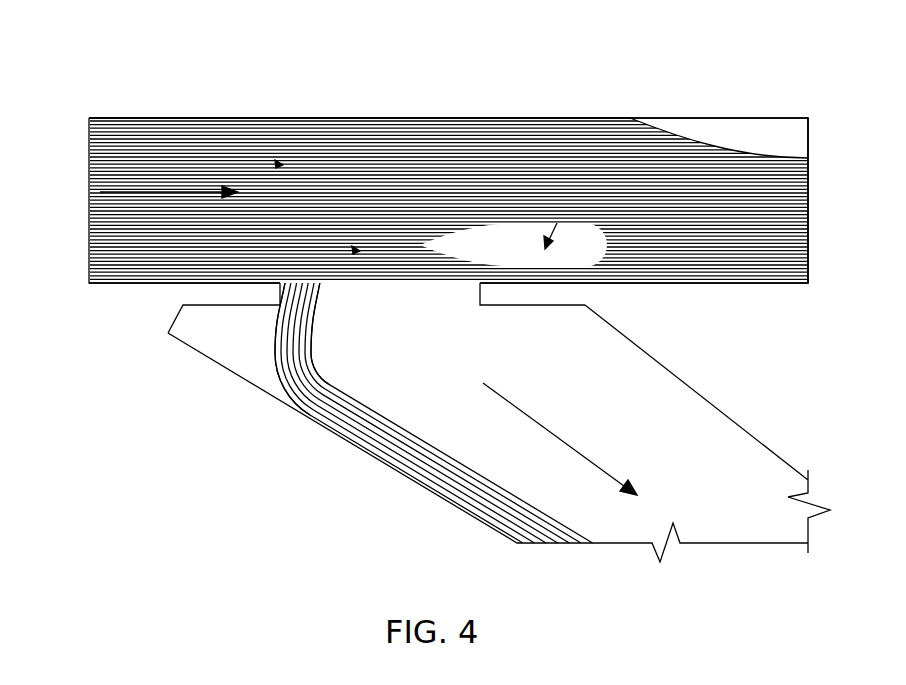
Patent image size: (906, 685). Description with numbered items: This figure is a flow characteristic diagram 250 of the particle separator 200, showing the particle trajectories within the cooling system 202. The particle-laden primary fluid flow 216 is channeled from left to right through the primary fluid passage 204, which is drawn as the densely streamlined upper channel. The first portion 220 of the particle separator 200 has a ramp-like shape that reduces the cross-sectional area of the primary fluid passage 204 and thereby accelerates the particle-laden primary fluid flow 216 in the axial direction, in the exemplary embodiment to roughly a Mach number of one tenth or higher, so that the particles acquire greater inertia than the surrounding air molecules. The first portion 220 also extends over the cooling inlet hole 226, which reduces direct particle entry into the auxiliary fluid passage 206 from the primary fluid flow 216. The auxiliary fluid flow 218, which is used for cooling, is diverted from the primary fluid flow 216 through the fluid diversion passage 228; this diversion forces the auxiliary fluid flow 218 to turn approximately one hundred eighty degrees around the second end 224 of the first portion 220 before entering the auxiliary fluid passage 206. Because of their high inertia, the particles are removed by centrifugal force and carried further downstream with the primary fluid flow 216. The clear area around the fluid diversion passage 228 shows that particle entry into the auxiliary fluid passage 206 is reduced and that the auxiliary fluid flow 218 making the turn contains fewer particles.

The flow characteristic diagram 250 is at (130, 112).
The particle separator 200 is at (333, 118).
The primary fluid passage 204 is at (283, 118).
The second end 224 is at (502, 118).
The fluid diversion passage 228 is at (630, 118).
The particle-laden primary fluid flow 216 is at (215, 118).
The cooling system 202 is at (165, 297).
The auxiliary fluid passage 206 is at (700, 478).
The auxiliary fluid flow 218 is at (587, 405).
The cooling inlet hole 226 is at (290, 358).
The first portion 220 is at (392, 284).